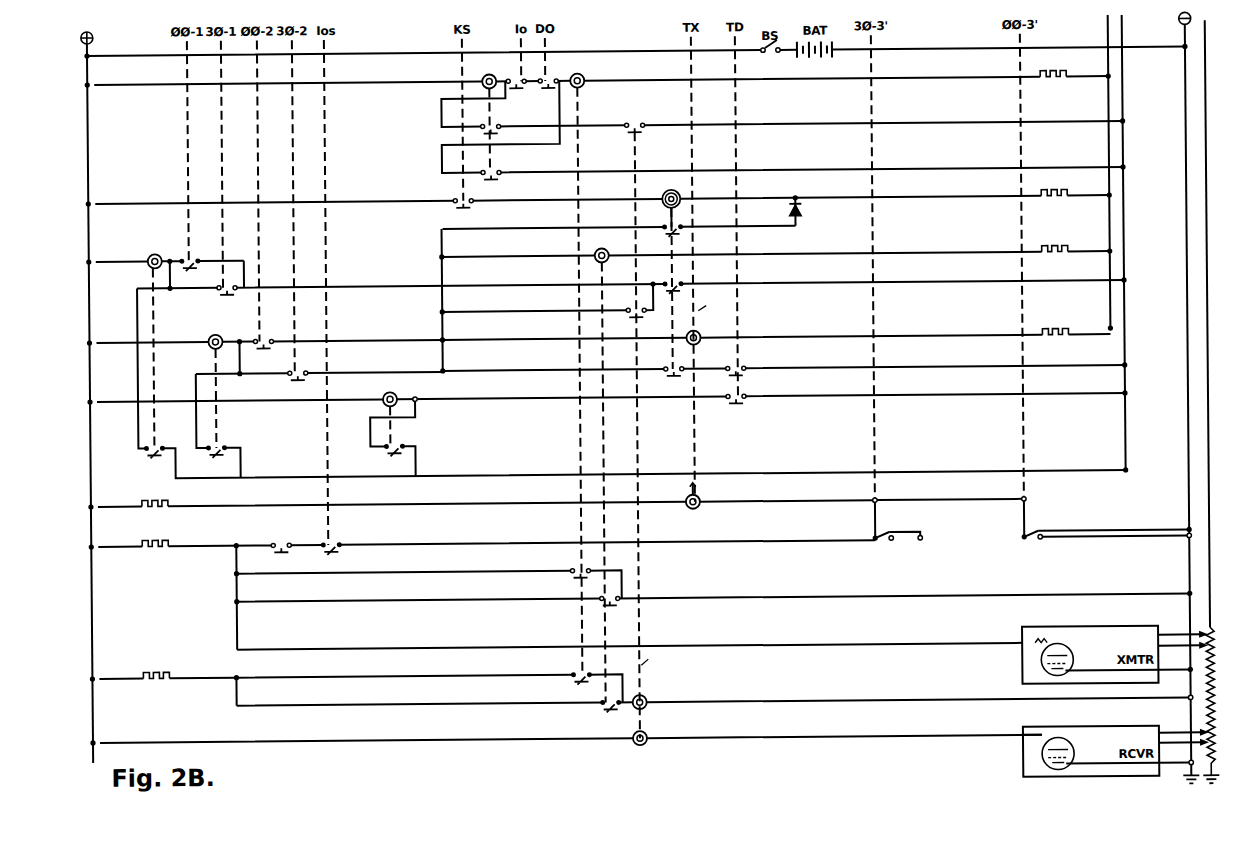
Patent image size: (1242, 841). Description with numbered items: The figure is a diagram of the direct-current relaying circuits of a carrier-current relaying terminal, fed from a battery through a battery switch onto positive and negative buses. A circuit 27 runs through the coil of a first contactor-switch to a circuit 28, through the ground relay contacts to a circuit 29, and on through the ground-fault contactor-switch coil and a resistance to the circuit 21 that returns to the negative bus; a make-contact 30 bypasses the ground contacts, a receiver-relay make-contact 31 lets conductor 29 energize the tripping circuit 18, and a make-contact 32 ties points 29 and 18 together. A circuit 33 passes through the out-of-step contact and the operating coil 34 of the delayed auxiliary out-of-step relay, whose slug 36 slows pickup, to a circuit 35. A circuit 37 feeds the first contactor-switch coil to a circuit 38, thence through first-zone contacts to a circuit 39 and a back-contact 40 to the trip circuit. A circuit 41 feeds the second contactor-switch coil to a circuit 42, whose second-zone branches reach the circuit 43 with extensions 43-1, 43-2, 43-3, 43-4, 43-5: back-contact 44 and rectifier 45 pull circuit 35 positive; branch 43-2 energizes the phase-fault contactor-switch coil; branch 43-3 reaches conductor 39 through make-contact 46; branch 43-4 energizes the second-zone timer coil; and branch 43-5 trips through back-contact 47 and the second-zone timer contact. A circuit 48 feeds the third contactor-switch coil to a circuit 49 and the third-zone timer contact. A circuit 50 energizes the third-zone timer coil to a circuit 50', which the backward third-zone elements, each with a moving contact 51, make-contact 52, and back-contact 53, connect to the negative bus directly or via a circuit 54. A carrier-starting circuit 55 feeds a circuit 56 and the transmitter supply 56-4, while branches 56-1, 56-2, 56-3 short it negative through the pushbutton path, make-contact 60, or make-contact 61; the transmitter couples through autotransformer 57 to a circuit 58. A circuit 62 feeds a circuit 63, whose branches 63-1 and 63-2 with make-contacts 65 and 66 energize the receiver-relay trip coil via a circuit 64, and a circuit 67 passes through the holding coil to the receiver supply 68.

The tripping circuit 18 is at (656, 252).
The circuit 21 is at (1100, 178).
The circuit 27 is at (601, 79).
The circuit 28 is at (773, 92).
The circuit 29 is at (773, 121).
The make-contact 30 is at (507, 116).
The make-contact 31 is at (656, 130).
The make-contact 32 is at (509, 155).
The circuit 33 is at (602, 199).
The operating coil 34 is at (664, 198).
The circuit 35 is at (794, 200).
The slug or short-circuited winding 36 is at (664, 208).
The circuit 37 is at (170, 263).
The circuit 38 is at (619, 353).
The circuit 39 is at (630, 285).
The back-contact 40 is at (681, 282).
The circuit 41 is at (269, 343).
The circuit 42 is at (314, 396).
The second-zone fault-responsive circuit 43 is at (442, 305).
The branch circuit 43-1 is at (618, 216).
The branch circuit 43-2 is at (776, 245).
The branch circuit 43-3 is at (547, 298).
The branch circuit 43-4 is at (776, 320).
The branch circuit 43-5 is at (784, 360).
The back-contact 44 is at (682, 226).
The rectifier 45 is at (806, 209).
The make-contact 46 is at (629, 308).
The back-contact 47 is at (665, 367).
The circuit 48 is at (611, 396).
The circuit 49 is at (387, 427).
The circuit 50 is at (560, 503).
The circuit 50' is at (936, 507).
The moving contact 51 is at (868, 540).
The make-contact 52 is at (885, 531).
The back-contact 53 is at (866, 548).
The circuit 54 is at (922, 546).
The carrier-starting circuit 55 is at (486, 542).
The carrier-starting circuit 56 is at (229, 591).
The branch circuit 56-1 is at (263, 555).
The branch circuit 56-2 is at (428, 575).
The branch circuit 56-3 is at (715, 596).
The positive circuit 56-4 is at (629, 637).
The carrier-current autotransformer 57 is at (1232, 713).
The circuit 58 is at (1200, 395).
The make-contact 60 is at (570, 579).
The make-contact 61 is at (602, 608).
The circuit 62 is at (167, 667).
The circuit 63 is at (235, 680).
The branch circuit 63-1 is at (429, 678).
The branch circuit 63-2 is at (715, 701).
The circuit 64 is at (642, 657).
The make-contact 65 is at (572, 667).
The make-contact 66 is at (597, 710).
The circuit 67 is at (571, 742).
The positive circuit 68 is at (988, 725).